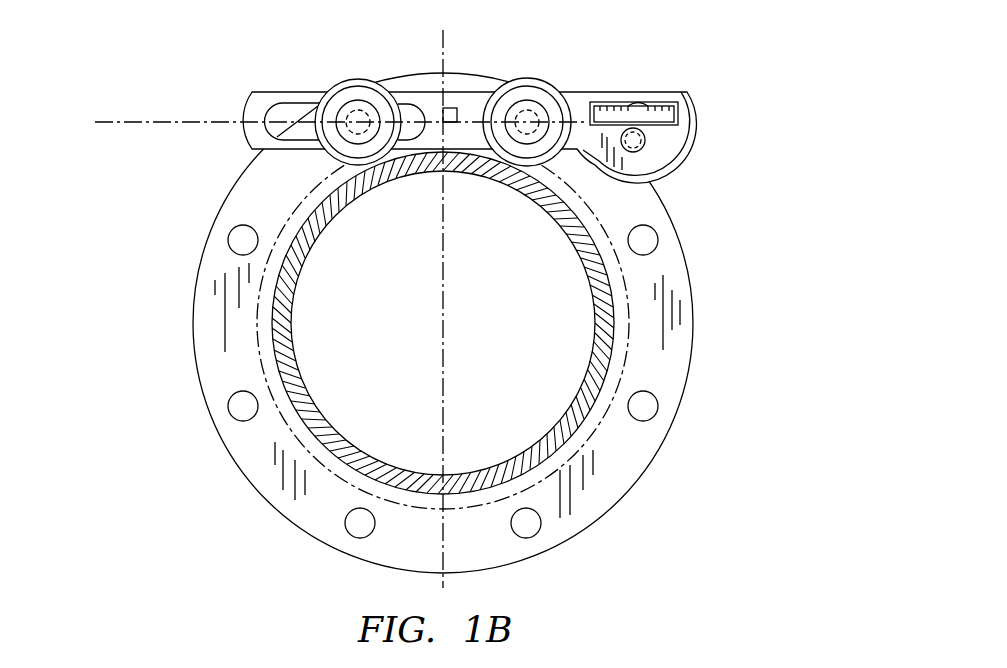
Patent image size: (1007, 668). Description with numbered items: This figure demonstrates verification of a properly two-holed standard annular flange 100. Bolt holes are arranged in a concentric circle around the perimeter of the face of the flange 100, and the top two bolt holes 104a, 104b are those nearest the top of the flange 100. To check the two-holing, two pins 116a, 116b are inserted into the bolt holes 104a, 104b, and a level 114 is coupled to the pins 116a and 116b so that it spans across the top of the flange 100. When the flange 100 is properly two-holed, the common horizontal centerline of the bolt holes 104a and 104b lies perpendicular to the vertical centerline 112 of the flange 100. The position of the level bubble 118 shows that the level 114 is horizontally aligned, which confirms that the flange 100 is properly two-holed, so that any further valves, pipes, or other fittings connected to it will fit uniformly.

The annular flange 100 is at (650, 545).
The bolt hole 104a is at (365, 136).
The bolt hole 104b is at (484, 160).
The vertical centerline 112 is at (447, 26).
The level 114 is at (663, 145).
The pin 116a is at (338, 80).
The pin 116b is at (549, 83).
The level bubble 118 is at (645, 103).